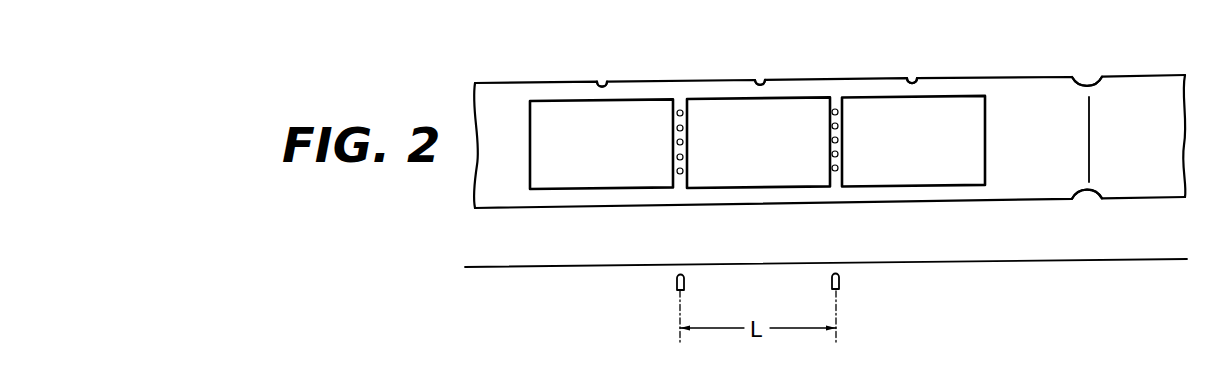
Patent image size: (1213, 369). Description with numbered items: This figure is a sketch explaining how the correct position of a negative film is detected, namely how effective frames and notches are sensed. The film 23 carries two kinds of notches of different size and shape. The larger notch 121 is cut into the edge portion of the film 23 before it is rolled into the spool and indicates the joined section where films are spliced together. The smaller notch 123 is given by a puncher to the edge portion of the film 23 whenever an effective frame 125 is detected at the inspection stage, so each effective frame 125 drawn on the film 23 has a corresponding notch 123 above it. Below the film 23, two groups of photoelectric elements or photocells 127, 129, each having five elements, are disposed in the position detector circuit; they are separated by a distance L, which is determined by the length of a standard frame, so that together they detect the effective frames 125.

The film 23 is at (1031, 201).
The notch 121 is at (1086, 76).
The notch 123 is at (603, 79).
The effective frame 125 is at (757, 142).
The photoelectric element group 127 is at (841, 279).
The photoelectric element group 129 is at (676, 277).